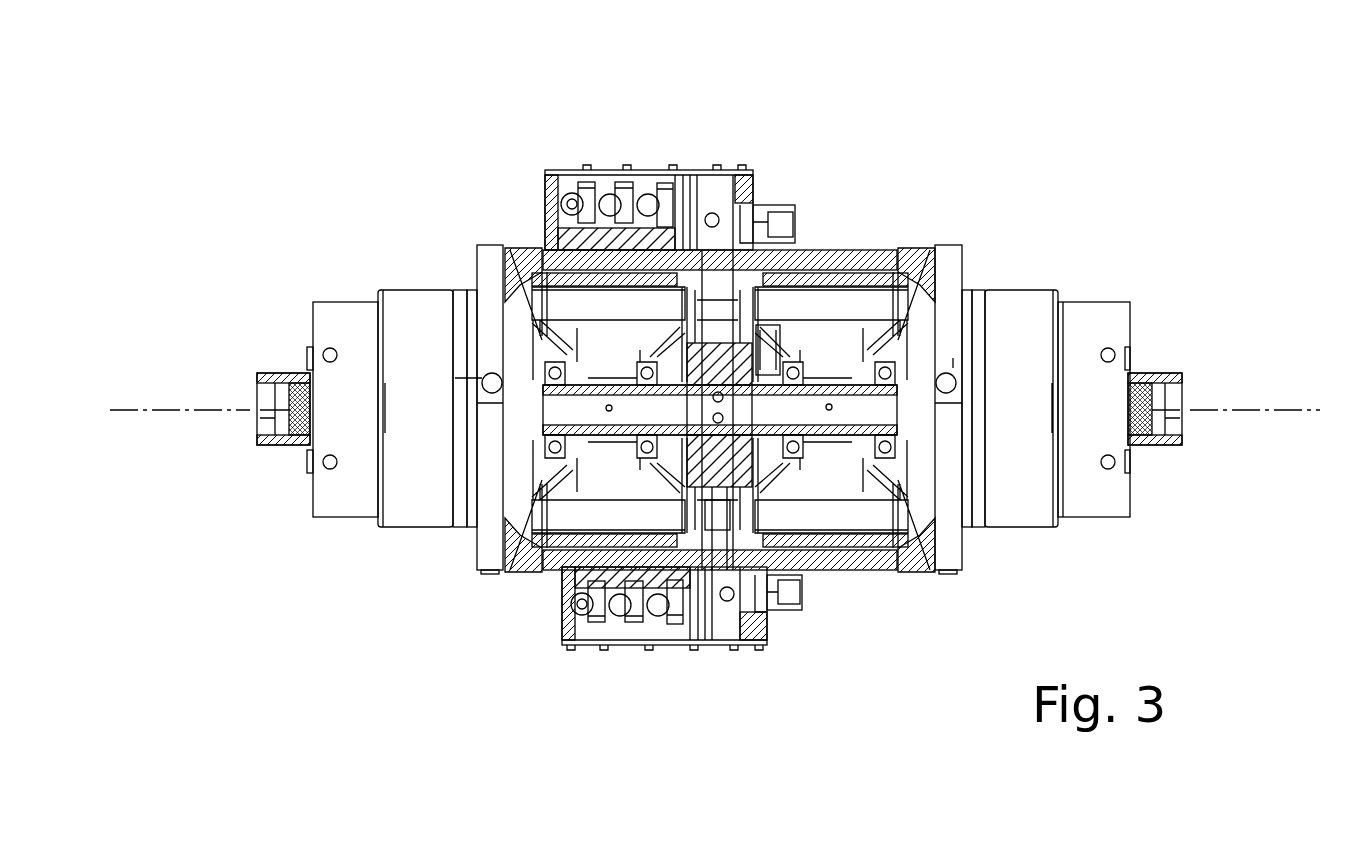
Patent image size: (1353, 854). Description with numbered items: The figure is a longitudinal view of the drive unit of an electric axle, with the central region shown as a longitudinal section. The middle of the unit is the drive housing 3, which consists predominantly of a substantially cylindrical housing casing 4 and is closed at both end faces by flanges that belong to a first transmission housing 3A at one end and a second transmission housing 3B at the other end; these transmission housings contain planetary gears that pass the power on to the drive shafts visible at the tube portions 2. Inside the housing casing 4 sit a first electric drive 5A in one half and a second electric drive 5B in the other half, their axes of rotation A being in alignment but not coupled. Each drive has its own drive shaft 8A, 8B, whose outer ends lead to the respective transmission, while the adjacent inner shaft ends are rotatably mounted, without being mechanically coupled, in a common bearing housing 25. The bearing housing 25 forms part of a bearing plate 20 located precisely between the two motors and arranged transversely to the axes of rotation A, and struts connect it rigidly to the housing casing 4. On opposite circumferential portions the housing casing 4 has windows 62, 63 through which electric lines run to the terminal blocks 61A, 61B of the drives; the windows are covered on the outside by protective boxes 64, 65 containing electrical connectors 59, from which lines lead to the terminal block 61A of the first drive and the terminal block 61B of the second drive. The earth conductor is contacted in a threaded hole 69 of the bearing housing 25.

The axis of rotation A is at (170, 410).
The tube portion 2 is at (277, 373).
The drive housing 3 is at (883, 235).
The first transmission housing 3A is at (375, 283).
The second transmission housing 3B is at (1057, 283).
The housing casing 4 is at (847, 265).
The first electric drive 5A is at (590, 245).
The second electric drive 5B is at (887, 560).
The drive shaft 8A is at (580, 348).
The drive shaft 8B is at (842, 363).
The bearing plate 20 is at (715, 503).
The bearing housing 25 is at (785, 330).
The electrical connectors 59 is at (648, 198).
The terminal block 61A is at (758, 545).
The terminal block 61B is at (758, 245).
The window 62 is at (702, 268).
The window 63 is at (727, 545).
The protective box 64 is at (540, 195).
The protective box 65 is at (555, 620).
The threaded hole 69 is at (720, 462).